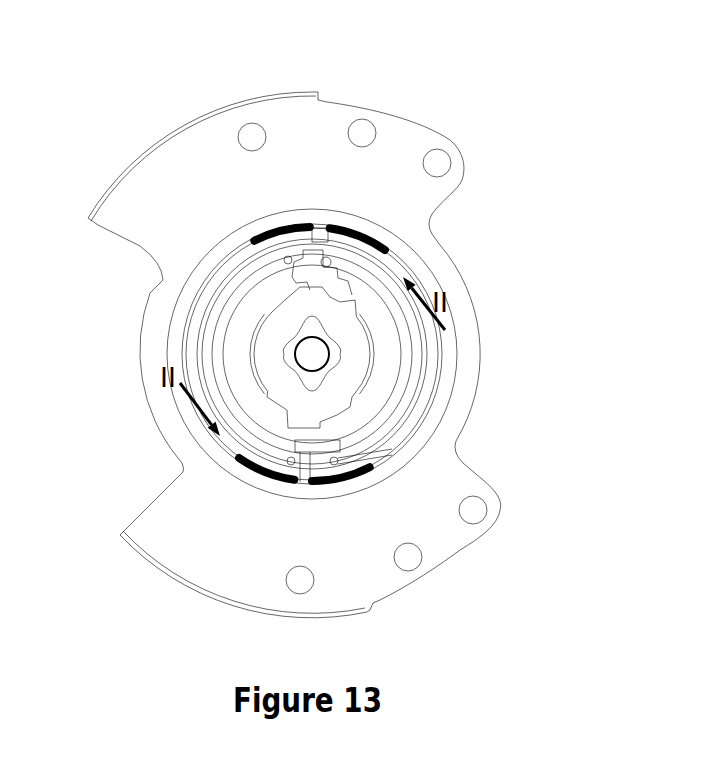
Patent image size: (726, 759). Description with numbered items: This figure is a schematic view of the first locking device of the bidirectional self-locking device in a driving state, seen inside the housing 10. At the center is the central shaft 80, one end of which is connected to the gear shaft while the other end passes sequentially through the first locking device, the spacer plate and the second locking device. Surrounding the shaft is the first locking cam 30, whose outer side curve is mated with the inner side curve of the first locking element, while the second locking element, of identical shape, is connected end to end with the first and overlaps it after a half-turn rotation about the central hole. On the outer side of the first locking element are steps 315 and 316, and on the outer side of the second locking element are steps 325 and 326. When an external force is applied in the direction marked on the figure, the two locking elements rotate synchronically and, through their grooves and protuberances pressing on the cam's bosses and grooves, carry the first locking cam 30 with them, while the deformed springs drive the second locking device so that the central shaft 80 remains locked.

The housing 10 is at (433, 143).
The first locking cam 30 is at (343, 356).
The central shaft 80 is at (307, 350).
The step 315 is at (355, 486).
The step 316 is at (353, 226).
The step 325 is at (255, 238).
The step 326 is at (265, 482).